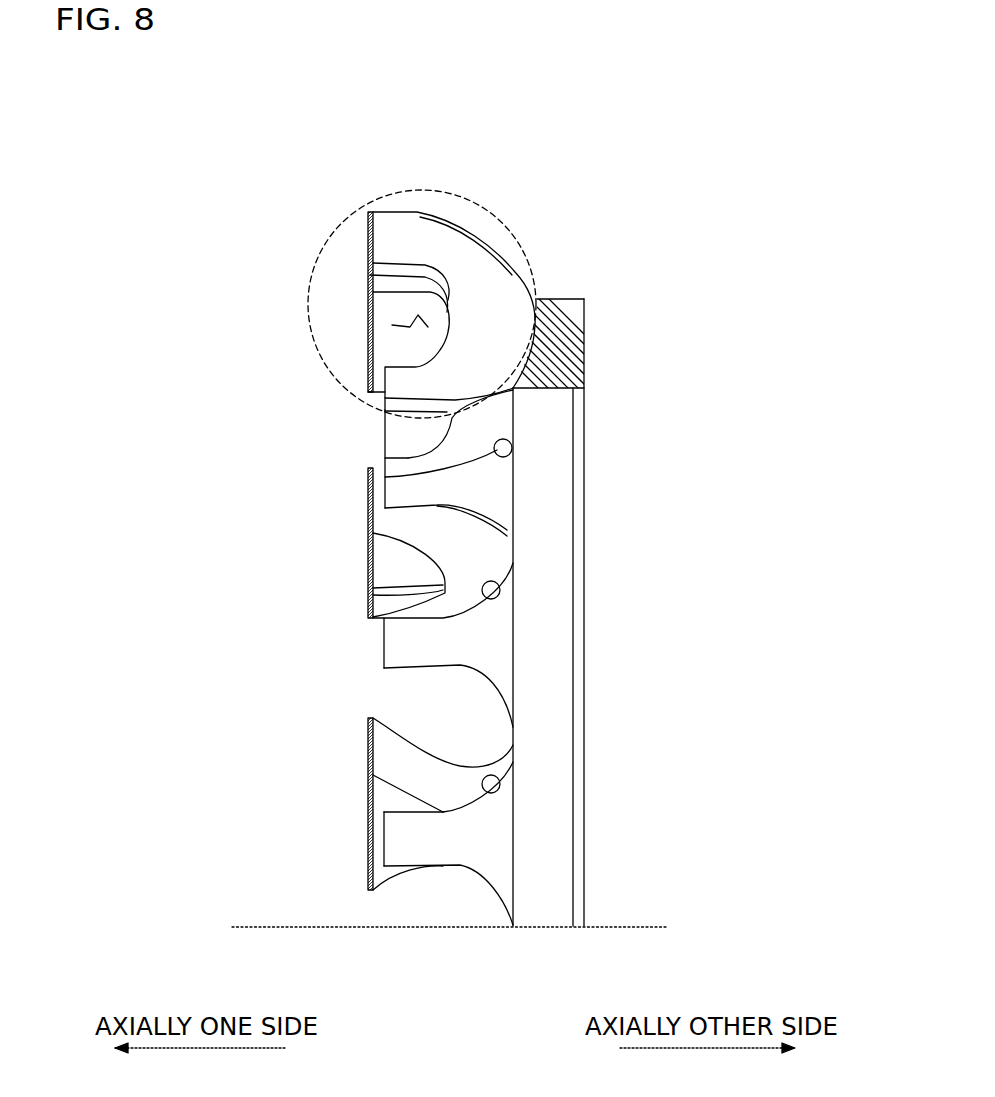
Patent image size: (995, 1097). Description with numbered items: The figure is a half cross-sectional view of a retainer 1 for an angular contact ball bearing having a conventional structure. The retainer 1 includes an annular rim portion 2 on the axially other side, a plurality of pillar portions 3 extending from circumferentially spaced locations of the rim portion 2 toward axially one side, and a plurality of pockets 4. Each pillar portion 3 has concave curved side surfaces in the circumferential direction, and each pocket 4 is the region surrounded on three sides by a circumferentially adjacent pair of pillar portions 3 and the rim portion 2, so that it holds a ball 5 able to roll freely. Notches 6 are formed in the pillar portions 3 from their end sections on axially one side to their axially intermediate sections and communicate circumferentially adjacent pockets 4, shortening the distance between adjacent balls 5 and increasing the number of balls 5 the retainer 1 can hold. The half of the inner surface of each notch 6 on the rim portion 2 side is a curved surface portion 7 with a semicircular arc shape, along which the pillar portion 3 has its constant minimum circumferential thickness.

The retainer for an angular contact ball bearing 1 is at (595, 293).
The rim portion 2 is at (584, 340).
The pillar portions 3 is at (383, 220).
The pockets 4 is at (537, 298).
The ball 5 is at (497, 200).
The notches 6 is at (370, 268).
The curved surface portion 7 is at (437, 268).